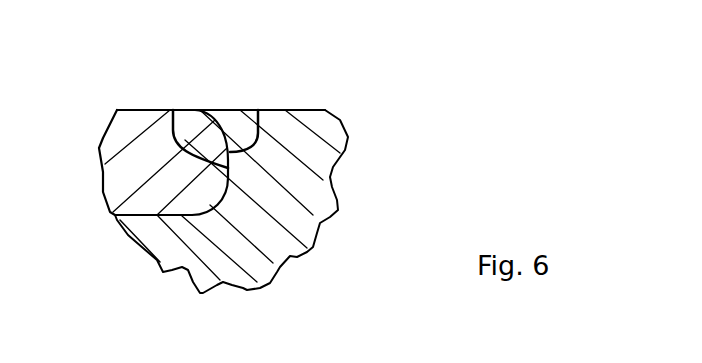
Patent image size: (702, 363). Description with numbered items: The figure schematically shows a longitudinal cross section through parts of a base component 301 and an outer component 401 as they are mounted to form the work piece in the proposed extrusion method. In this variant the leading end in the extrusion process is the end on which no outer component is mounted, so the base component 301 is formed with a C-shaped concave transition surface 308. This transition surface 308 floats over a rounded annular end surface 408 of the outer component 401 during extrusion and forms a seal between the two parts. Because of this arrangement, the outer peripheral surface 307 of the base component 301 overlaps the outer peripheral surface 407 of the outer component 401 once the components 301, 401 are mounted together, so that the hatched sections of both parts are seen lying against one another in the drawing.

The base component 301 is at (318, 171).
The outer peripheral surface of the base component 307 is at (282, 110).
The C-shaped concave transition surface 308 is at (173, 110).
The outer component 401 is at (128, 158).
The outer peripheral surface of the outer component 407 is at (147, 110).
The rounded annular end surface 408 is at (258, 110).